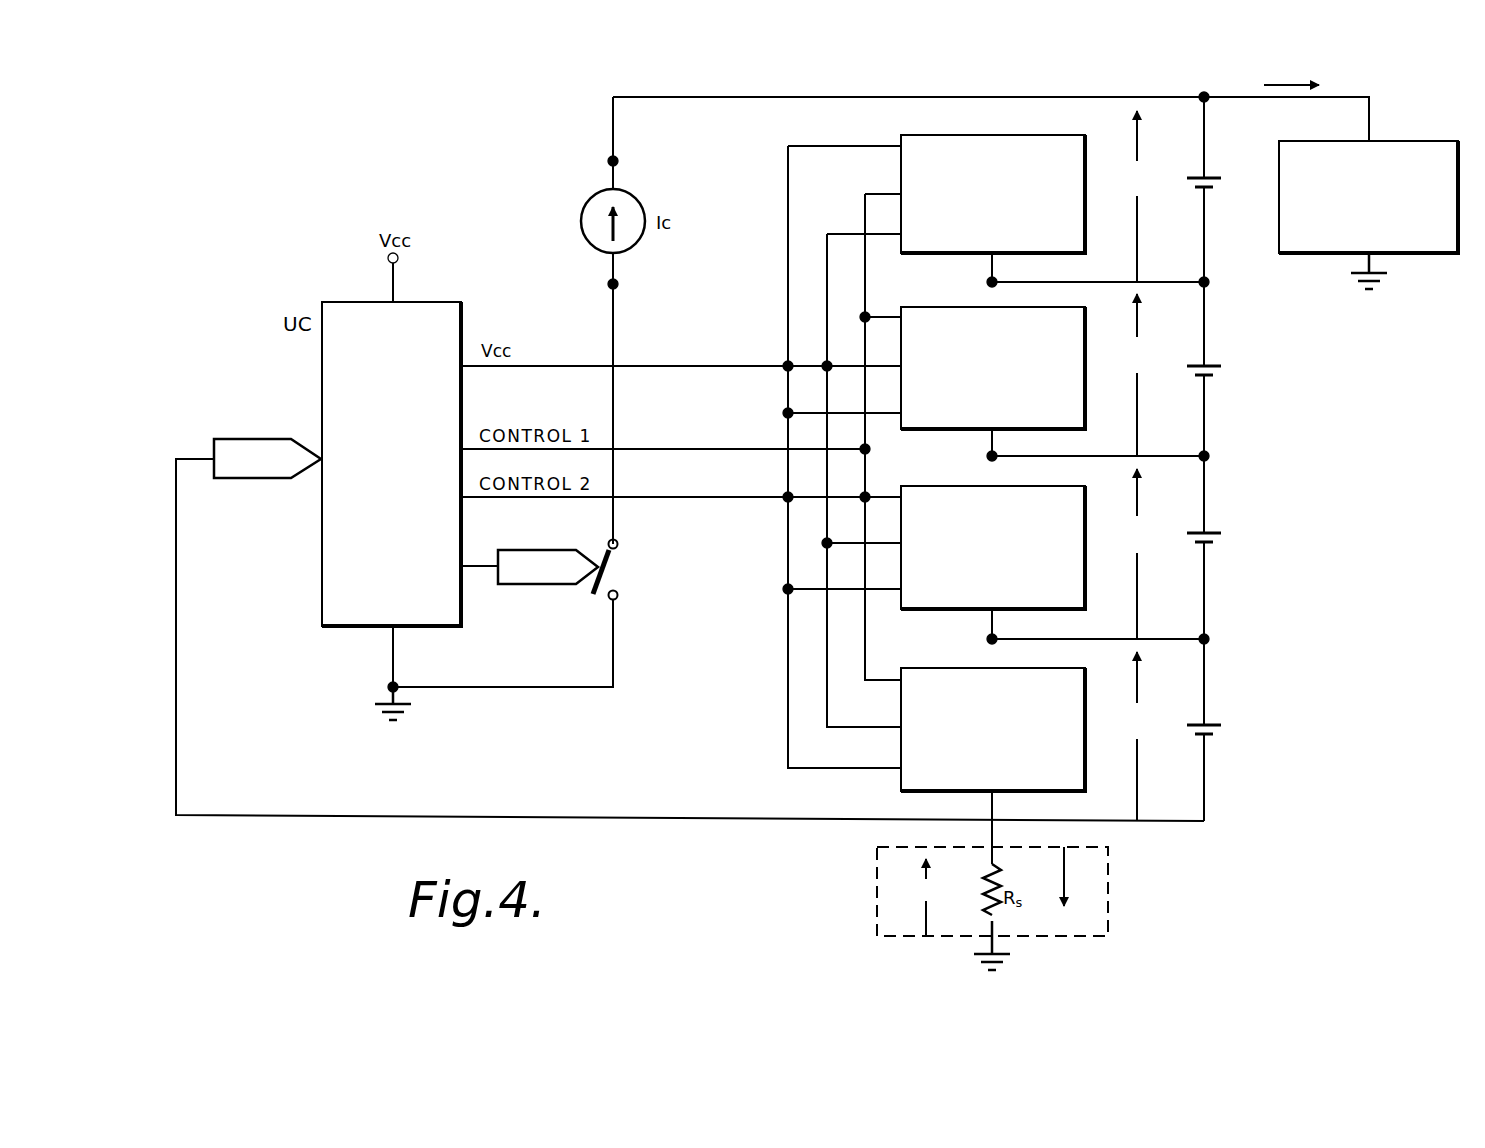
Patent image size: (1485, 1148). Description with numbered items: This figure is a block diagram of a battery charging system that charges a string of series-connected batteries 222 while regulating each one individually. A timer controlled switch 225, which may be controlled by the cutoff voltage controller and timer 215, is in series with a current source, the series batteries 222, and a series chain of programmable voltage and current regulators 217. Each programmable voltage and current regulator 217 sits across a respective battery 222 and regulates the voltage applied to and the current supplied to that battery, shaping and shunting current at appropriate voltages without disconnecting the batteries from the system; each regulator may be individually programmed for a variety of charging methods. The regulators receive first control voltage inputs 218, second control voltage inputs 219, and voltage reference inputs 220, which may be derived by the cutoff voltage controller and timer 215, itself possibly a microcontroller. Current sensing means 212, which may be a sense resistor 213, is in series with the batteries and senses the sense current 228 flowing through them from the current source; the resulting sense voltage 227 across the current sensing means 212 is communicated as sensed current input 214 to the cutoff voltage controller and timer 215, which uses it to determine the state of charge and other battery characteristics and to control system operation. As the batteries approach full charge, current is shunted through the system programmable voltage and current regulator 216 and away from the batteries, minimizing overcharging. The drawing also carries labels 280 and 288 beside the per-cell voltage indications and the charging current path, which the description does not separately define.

The current sensing means 212 is at (1107, 892).
The resistor R_S 213 is at (984, 898).
The sensed current input 214 is at (267, 438).
The cutoff voltage controller and timer 215 is at (438, 300).
The system programmable voltage and current regulator 216 is at (588, 196).
The programmable voltage and current regulator 217 is at (902, 133).
The Control 1 voltage inputs 218 is at (674, 448).
The Control 2 voltage inputs 219 is at (682, 496).
The voltage reference inputs V_cc 220 is at (674, 364).
The batteries B1 222 is at (1270, 126).
The timer controlled switch S1 225 is at (582, 592).
The Sense Voltage V_S 227 is at (914, 882).
The Sense Current I_S 228 is at (1092, 872).
The cell voltage VB 280 is at (1140, 204).
The charging current Icc 288 is at (1360, 86).